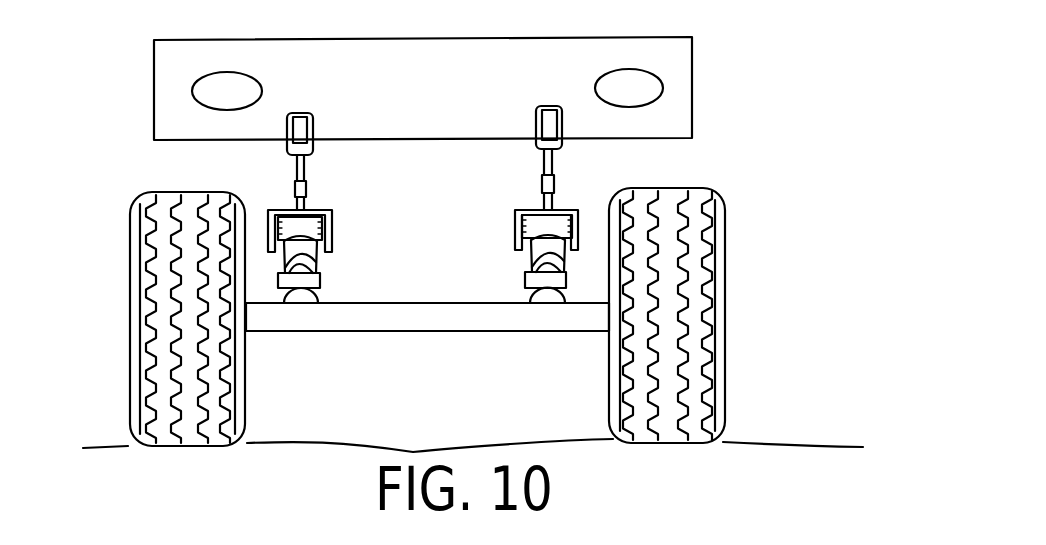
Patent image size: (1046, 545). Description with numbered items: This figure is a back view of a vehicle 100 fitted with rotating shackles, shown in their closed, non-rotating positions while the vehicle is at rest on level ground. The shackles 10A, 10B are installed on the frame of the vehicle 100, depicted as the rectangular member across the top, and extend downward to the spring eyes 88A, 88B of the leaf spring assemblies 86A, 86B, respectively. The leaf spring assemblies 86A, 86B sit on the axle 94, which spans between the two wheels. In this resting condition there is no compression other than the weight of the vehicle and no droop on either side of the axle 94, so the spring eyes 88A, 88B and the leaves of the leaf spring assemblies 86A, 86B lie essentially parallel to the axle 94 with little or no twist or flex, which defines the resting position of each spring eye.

The vehicle 100 is at (120, 62).
The shackle 10A is at (252, 279).
The shackle 10B is at (598, 274).
The spring eye 88A is at (317, 257).
The spring eye 88B is at (532, 248).
The leaf spring assembly 86A is at (298, 293).
The leaf spring assembly 86B is at (550, 292).
The axle 94 is at (420, 320).